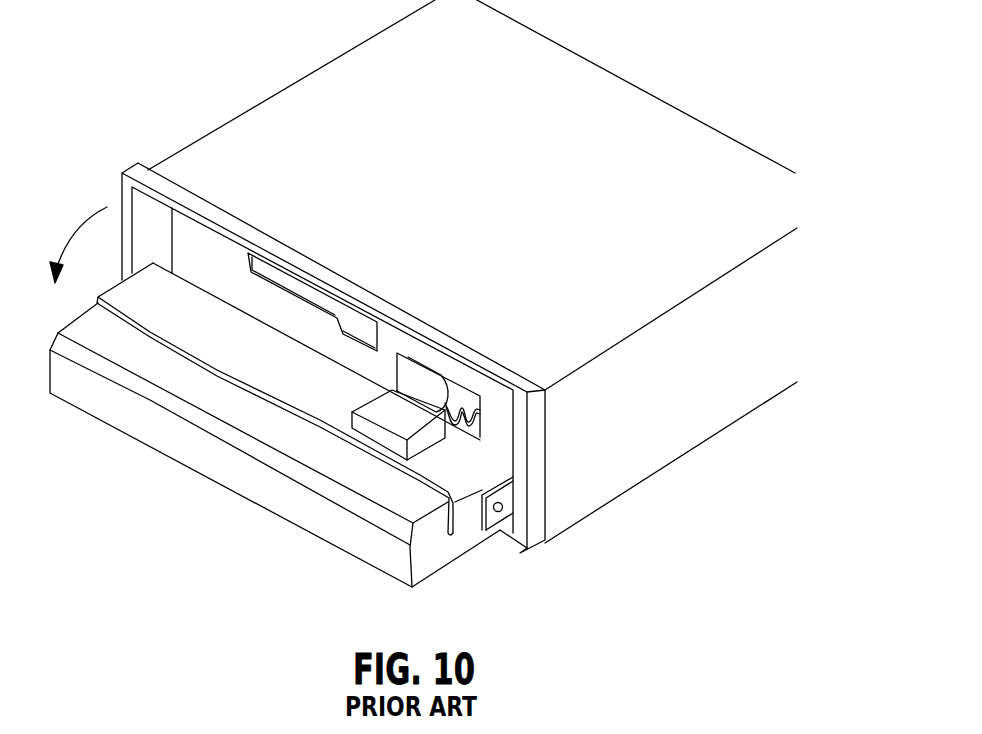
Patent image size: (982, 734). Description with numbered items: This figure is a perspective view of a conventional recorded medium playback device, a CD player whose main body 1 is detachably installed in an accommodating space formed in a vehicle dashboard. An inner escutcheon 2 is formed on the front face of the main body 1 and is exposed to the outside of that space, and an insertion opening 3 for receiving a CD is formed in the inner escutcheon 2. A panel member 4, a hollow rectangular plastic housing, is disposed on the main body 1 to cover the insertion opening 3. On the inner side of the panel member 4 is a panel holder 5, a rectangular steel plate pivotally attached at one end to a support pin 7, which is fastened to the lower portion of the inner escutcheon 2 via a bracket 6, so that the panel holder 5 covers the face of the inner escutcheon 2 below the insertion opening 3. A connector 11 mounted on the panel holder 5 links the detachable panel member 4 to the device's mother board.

The main body 1 is at (310, 90).
The inner escutcheon 2 is at (187, 230).
The insertion opening 3 is at (270, 272).
The panel member 4 is at (125, 417).
The panel holder 5 is at (124, 302).
The bracket 6 is at (508, 499).
The support pin 7 is at (495, 512).
The connector 11 is at (387, 440).